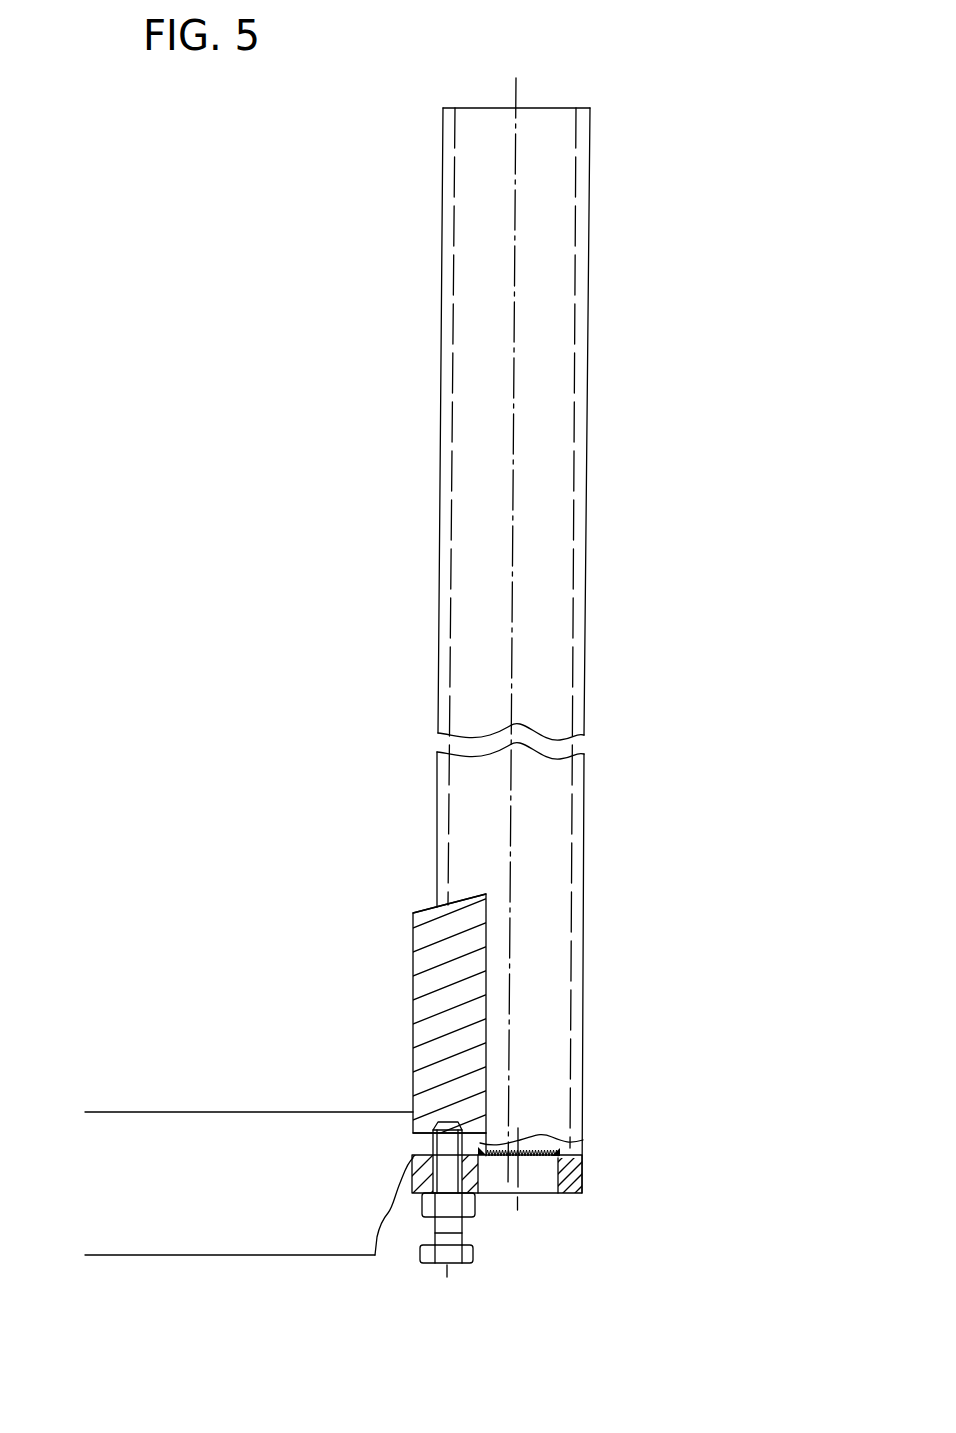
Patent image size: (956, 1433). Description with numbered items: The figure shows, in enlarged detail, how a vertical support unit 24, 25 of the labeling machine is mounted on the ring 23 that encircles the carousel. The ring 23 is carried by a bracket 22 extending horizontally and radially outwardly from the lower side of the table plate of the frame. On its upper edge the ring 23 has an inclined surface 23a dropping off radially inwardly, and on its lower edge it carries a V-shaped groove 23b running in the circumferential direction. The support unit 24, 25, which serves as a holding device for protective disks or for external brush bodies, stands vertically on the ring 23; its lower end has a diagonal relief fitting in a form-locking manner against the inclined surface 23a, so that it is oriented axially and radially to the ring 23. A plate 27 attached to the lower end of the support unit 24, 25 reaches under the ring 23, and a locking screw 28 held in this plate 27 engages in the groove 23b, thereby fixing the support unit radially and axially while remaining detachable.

The bracket 22 is at (227, 1158).
The ring 23 is at (445, 1022).
The inclined surface 23a is at (423, 909).
The V-shaped groove 23b is at (448, 1120).
The support unit 24 is at (421, 644).
The support unit 25 is at (477, 258).
The plate 27 is at (567, 1177).
The locking screw 28 is at (447, 1263).